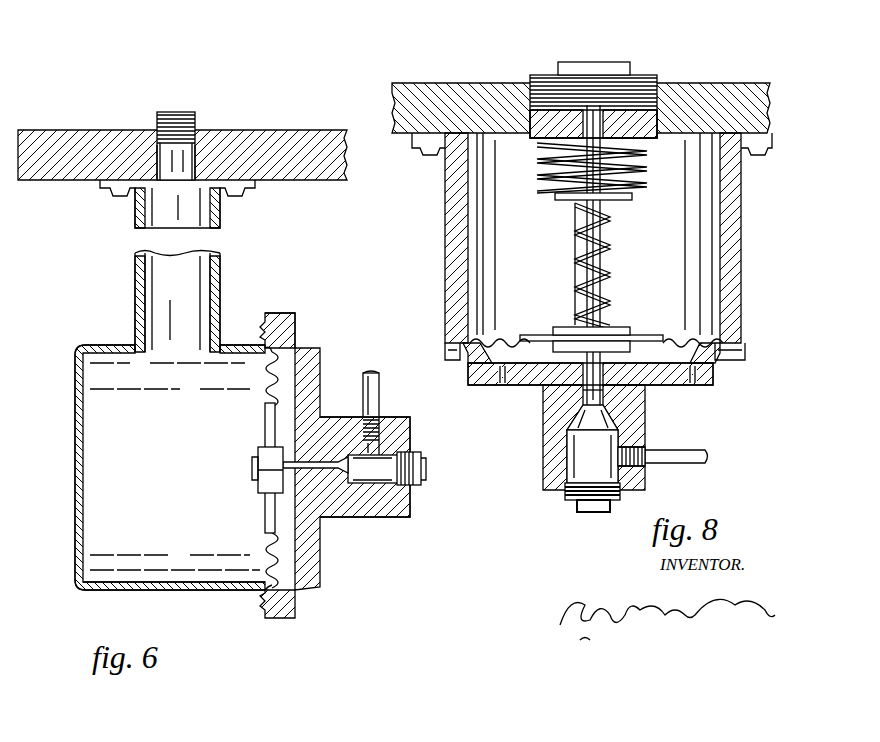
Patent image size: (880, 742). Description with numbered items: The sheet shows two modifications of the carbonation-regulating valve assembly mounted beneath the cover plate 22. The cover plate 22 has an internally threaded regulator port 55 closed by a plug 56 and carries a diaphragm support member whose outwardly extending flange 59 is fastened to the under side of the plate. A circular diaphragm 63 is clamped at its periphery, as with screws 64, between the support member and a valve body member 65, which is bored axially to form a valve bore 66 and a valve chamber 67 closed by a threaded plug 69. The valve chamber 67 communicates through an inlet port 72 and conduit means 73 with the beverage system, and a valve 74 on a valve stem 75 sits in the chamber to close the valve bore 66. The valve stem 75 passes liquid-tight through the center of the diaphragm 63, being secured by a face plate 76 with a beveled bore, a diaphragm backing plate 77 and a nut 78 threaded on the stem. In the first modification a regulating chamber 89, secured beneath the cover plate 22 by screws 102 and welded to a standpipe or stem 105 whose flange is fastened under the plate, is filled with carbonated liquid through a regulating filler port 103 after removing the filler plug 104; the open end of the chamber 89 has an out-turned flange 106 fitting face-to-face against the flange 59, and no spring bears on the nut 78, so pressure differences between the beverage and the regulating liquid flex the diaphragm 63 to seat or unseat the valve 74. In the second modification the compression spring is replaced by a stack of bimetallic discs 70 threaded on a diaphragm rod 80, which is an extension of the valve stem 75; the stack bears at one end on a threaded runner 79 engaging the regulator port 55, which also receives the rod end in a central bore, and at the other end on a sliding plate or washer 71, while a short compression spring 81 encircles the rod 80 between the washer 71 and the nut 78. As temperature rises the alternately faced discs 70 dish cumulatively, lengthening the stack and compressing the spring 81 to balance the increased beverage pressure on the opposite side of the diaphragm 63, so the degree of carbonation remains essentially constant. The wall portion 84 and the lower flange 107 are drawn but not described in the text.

In FIG. 6, the cover plate 22 is at (285, 135).
In FIG. 8, the cover plate 22 is at (715, 93).
In FIG. 8, the regulator port 55 is at (530, 105).
In FIG. 8, the plug 56 is at (625, 62).
In FIG. 6, the flange 59 is at (295, 320).
In FIG. 6, the diaphragm 63 is at (270, 380).
In FIG. 8, the diaphragm 63 is at (695, 341).
In FIG. 8, the screws 64 is at (412, 160).
In FIG. 6, the valve body member 65 is at (335, 425).
In FIG. 8, the valve body member 65 is at (560, 426).
In FIG. 8, the valve bore 66 is at (585, 397).
In FIG. 8, the valve chamber 67 is at (580, 467).
In FIG. 6, the threaded plug 69 is at (417, 482).
In FIG. 8, the threaded plug 69 is at (580, 508).
In FIG. 8, the bimetallic discs 70 is at (640, 179).
In FIG. 8, the plate or washer 71 is at (615, 199).
In FIG. 6, the inlet port 72 is at (385, 447).
In FIG. 8, the inlet port 72 is at (630, 467).
In FIG. 6, the conduit means 73 is at (379, 385).
In FIG. 8, the conduit means 73 is at (700, 456).
In FIG. 6, the valve 74 is at (335, 478).
In FIG. 8, the valve 74 is at (612, 411).
In FIG. 8, the valve stem 75 is at (600, 387).
In FIG. 8, the face plate 76 is at (625, 347).
In FIG. 6, the diaphragm backing plate 77 is at (265, 520).
In FIG. 8, the diaphragm backing plate 77 is at (535, 335).
In FIG. 6, the nut 78 is at (258, 453).
In FIG. 8, the nut 78 is at (615, 327).
In FIG. 8, the threaded runner 79 is at (500, 130).
In FIG. 8, the diaphragm rod 80 is at (600, 236).
In FIG. 8, the short compression spring 81 is at (600, 283).
In FIG. 6, the body wall 84 is at (315, 350).
In FIG. 8, the body wall 84 is at (505, 376).
In FIG. 6, the regulating chamber 89 is at (105, 528).
In FIG. 6, the screws 102 is at (245, 190).
In FIG. 6, the regulating filler port 103 is at (193, 150).
In FIG. 6, the filler plug 104 is at (160, 117).
In FIG. 6, the standpipe or stem 105 is at (220, 255).
In FIG. 6, the out-turned flange 106 is at (275, 315).
In FIG. 6, the lower flange 107 is at (265, 600).